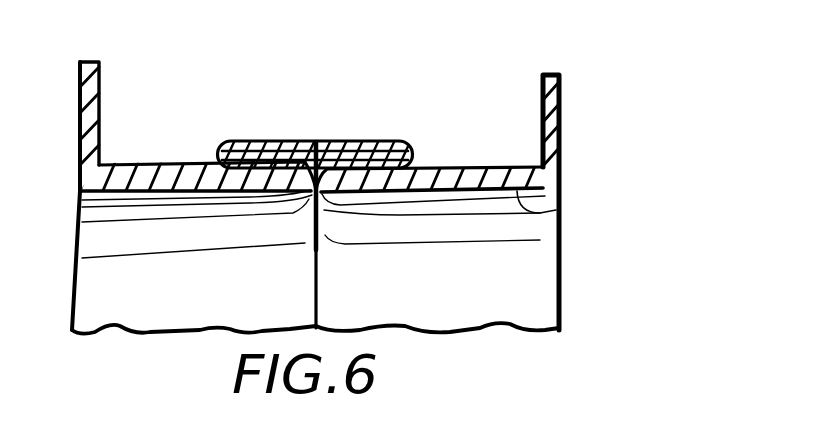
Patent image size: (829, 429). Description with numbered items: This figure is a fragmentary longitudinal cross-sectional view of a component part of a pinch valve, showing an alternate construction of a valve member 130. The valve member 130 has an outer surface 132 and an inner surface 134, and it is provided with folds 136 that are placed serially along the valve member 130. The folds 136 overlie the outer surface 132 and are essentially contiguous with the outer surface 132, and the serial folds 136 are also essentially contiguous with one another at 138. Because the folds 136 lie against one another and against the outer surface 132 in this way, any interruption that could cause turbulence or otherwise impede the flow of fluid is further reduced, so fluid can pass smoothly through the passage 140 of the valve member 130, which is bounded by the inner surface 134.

The valve member 130 is at (567, 151).
The outer surface 132 is at (468, 168).
The inner surface 134 is at (545, 213).
The folds 136 is at (310, 143).
The contiguous location of serial folds 138 is at (310, 196).
The passage 140 is at (141, 196).